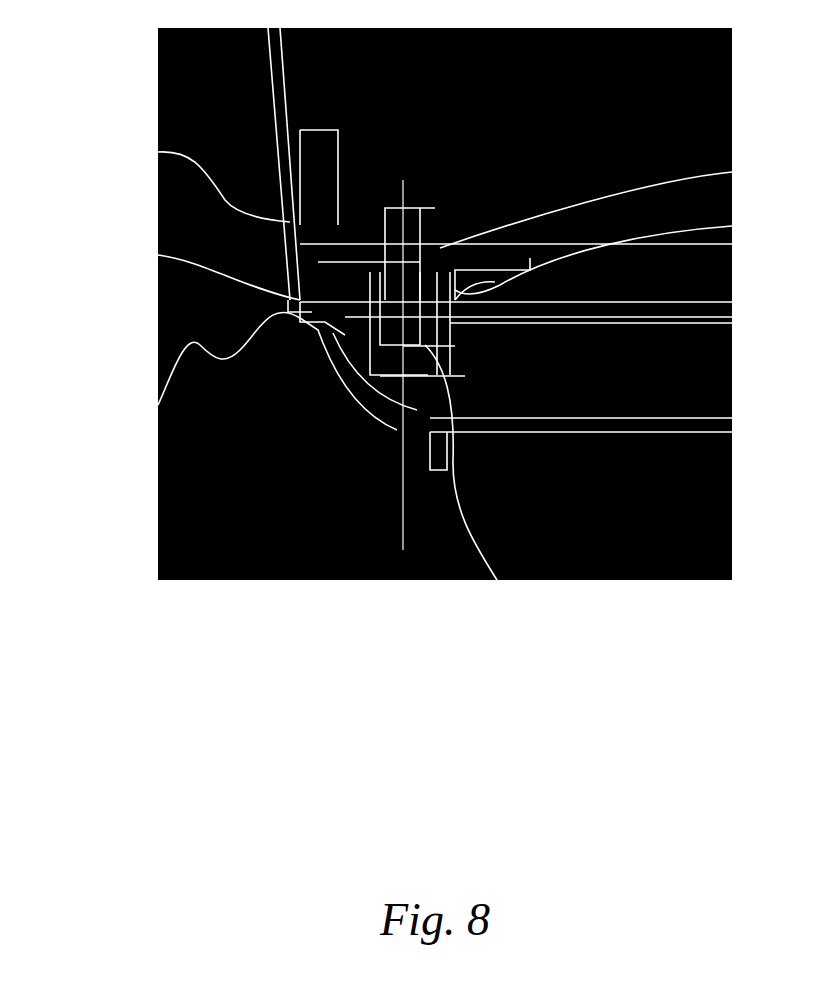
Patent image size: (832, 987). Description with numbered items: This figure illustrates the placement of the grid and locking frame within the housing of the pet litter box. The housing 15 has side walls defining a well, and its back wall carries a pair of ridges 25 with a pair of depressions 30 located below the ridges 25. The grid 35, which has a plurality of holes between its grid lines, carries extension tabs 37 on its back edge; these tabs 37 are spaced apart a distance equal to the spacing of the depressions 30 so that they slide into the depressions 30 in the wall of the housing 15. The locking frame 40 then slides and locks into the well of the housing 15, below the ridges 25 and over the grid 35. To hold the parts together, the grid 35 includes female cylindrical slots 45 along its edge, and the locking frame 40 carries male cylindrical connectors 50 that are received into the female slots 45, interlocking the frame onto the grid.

The housing 15 is at (311, 652).
The ridges 25 is at (158, 152).
The depressions 30 is at (158, 405).
The grid 35 is at (732, 323).
The extension tabs 37 is at (158, 255).
The locking frame 40 is at (732, 225).
The female cylindrical slots 45 is at (497, 580).
The male cylindrical connectors 50 is at (732, 172).